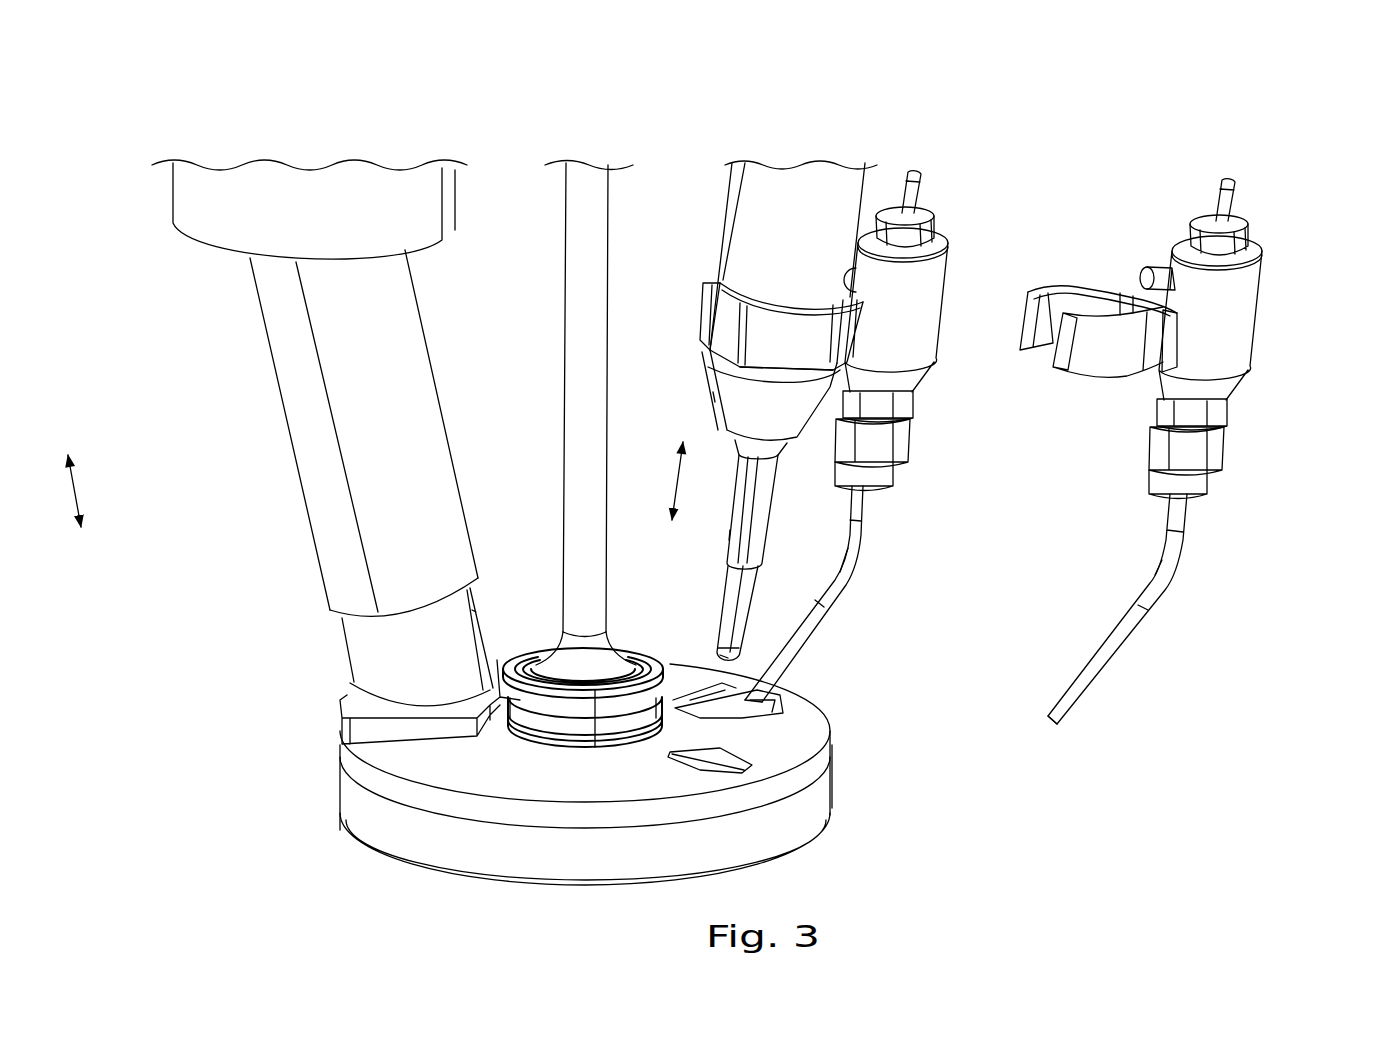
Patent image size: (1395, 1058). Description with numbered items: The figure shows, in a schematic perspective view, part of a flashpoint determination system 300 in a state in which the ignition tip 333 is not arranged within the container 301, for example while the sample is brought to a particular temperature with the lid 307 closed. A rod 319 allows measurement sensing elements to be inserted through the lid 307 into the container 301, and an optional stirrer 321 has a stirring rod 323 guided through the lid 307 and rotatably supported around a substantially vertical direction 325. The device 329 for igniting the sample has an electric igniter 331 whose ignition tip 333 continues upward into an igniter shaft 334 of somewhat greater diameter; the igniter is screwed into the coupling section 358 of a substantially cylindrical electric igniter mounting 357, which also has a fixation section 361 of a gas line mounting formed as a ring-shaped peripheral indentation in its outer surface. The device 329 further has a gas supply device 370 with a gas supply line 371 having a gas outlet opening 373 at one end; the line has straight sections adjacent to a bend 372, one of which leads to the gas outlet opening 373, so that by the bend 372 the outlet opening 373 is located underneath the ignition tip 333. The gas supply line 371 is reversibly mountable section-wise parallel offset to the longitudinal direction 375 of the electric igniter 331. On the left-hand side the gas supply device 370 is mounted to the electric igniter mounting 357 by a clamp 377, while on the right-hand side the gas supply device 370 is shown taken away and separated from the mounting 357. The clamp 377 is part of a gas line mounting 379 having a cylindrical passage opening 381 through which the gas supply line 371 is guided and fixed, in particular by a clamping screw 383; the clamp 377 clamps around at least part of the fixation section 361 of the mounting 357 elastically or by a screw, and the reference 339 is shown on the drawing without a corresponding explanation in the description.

The flashpoint determination system 300 is at (1265, 112).
The container 301 is at (340, 792).
The lid 307 is at (822, 757).
The rod 319 is at (292, 488).
The stirrer 321 is at (540, 577).
The stirring rod 323 is at (563, 398).
The vertical direction 325 is at (75, 488).
The device for igniting 329 is at (888, 165).
The electric igniter 331 is at (715, 537).
The ignition tip 333 is at (720, 650).
The igniter shaft 334 is at (775, 485).
The injector assembly 339 is at (1147, 188).
The electric igniter mounting 357 is at (718, 272).
The coupling section 358 is at (708, 400).
The fixation section of the gas line mounting 361 is at (699, 282).
The gas supply device 370 is at (1285, 330).
The gas supply line 371 is at (842, 626).
The bend 372 is at (850, 562).
The gas outlet opening 373 is at (745, 707).
The longitudinal direction 375 is at (675, 480).
The clamp 377 is at (800, 330).
The gas line mounting 379 is at (1143, 263).
The cylindrical passage opening 381 is at (920, 200).
The clamping screw 383 is at (937, 228).